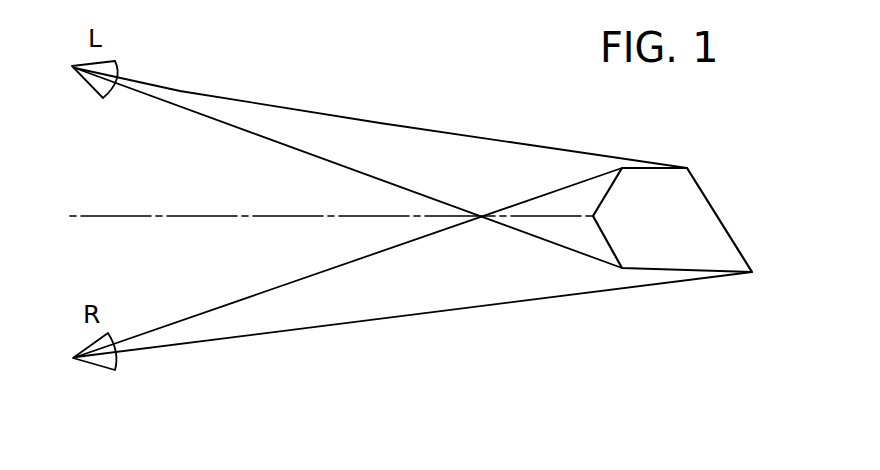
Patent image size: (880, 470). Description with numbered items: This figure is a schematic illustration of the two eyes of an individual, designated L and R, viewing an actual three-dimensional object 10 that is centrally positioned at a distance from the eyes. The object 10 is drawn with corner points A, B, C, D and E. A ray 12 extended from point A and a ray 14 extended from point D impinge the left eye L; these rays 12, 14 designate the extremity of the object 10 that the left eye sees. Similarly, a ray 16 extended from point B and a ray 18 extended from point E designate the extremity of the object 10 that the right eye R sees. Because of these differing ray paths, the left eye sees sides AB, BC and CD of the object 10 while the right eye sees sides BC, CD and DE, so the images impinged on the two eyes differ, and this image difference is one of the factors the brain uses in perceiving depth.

The object 10 is at (720, 220).
The ray 12 is at (467, 137).
The ray 14 is at (420, 193).
The ray 16 is at (333, 272).
The ray 18 is at (443, 312).